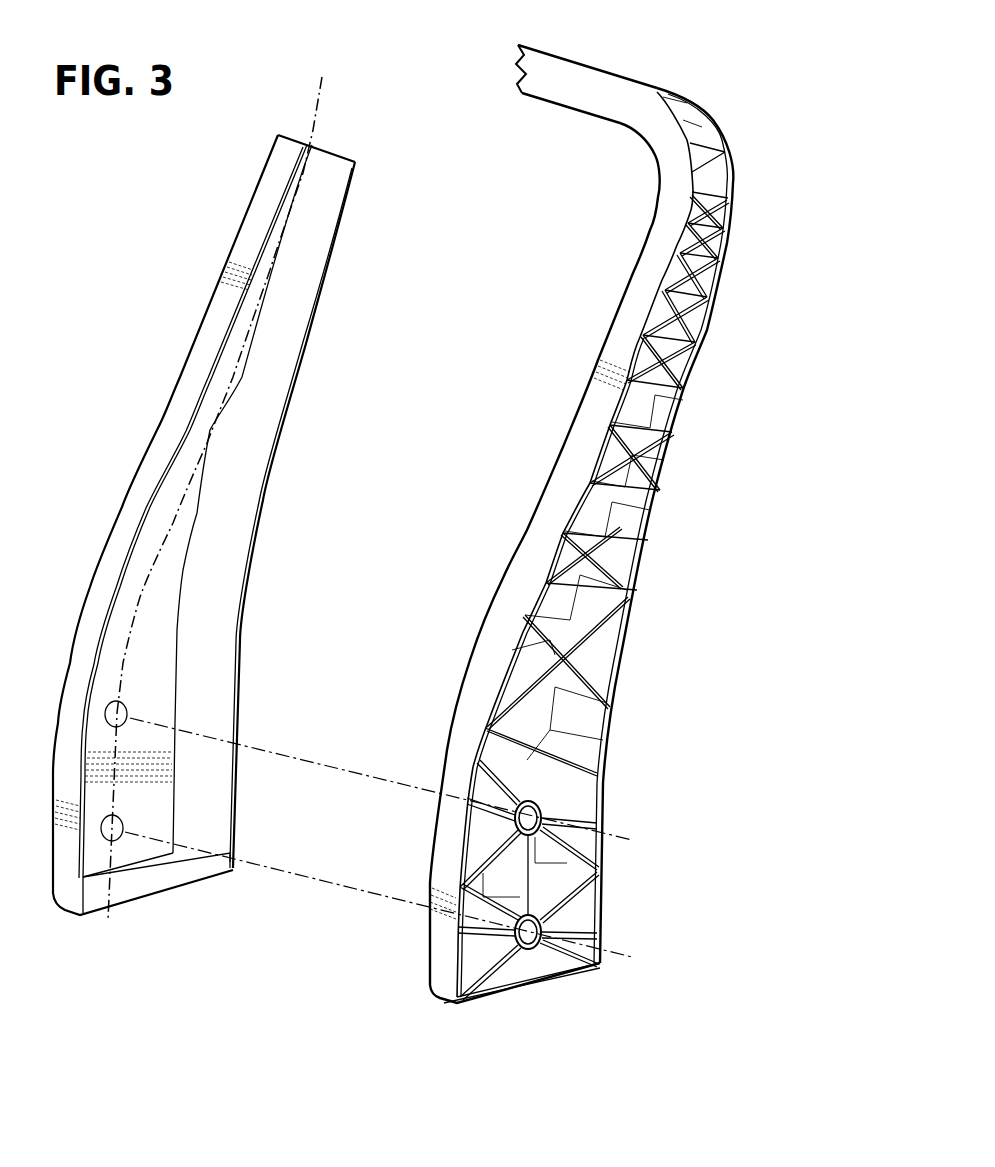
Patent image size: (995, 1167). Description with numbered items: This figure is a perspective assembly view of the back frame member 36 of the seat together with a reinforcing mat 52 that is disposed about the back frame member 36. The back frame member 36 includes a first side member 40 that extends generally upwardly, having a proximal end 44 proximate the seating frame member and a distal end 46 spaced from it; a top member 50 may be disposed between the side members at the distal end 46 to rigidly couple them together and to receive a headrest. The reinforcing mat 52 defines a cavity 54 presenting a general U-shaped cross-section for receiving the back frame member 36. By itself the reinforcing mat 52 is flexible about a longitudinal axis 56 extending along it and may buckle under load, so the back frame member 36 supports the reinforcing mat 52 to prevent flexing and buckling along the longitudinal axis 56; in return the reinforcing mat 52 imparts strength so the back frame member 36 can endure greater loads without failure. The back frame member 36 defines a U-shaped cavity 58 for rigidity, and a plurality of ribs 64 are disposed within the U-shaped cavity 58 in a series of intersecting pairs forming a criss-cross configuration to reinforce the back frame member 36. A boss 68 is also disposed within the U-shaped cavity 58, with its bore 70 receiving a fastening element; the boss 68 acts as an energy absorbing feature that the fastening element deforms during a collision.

The back frame member 36 is at (656, 74).
The first side member 40 is at (728, 327).
The proximal end 44 is at (640, 945).
The distal end 46 is at (737, 172).
The top member 50 is at (565, 75).
The reinforcing mat 52 is at (130, 507).
The cavity 54 is at (206, 565).
The longitudinal axis 56 is at (324, 98).
The U-shaped cavity 58 is at (590, 718).
The ribs 64 is at (647, 432).
The boss 68 is at (493, 812).
The bore 70 is at (526, 818).